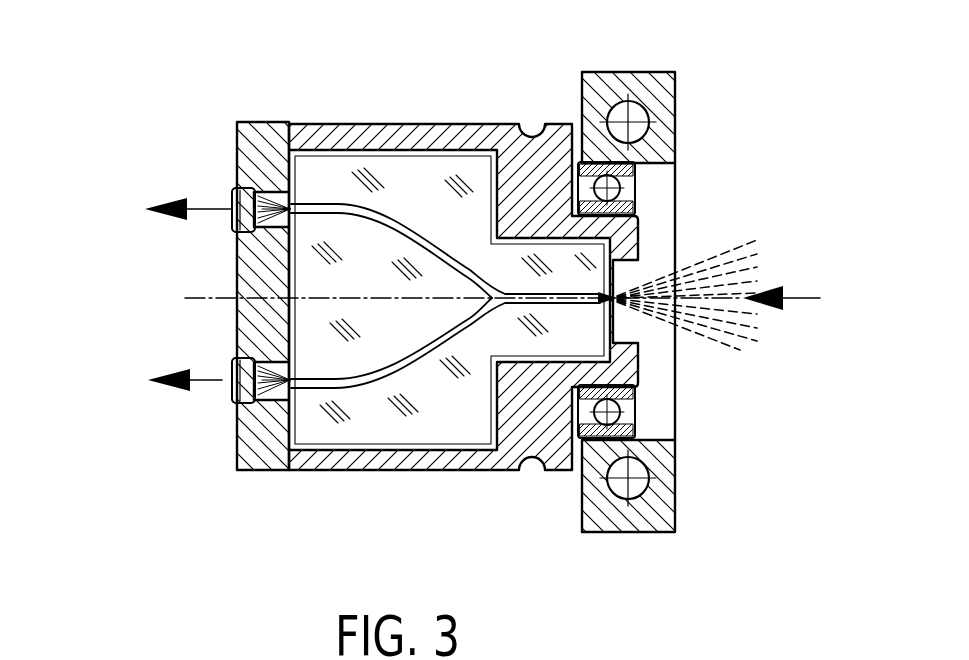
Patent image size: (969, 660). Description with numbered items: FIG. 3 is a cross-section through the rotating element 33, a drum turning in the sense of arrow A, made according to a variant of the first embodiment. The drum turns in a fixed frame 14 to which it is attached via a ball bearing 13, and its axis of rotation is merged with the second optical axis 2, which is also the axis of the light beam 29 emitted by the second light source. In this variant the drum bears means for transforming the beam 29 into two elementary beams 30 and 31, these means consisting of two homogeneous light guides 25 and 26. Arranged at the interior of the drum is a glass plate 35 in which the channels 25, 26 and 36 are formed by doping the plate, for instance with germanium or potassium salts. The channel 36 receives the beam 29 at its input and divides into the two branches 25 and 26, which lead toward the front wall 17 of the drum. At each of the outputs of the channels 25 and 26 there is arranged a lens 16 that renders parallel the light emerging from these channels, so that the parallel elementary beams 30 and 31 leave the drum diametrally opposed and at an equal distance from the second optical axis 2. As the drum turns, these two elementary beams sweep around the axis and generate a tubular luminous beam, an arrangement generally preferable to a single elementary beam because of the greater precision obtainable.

The second optical axis 2 is at (792, 298).
The ball bearing 13 is at (612, 412).
The fixed frame 14 is at (647, 92).
The lens 16 is at (233, 190).
The front wall 17 is at (253, 122).
The homogeneous light guide 25 is at (425, 252).
The homogeneous light guide 26 is at (423, 336).
The light beam 29 is at (743, 353).
The elementary beam 30 is at (192, 209).
The elementary beam 31 is at (200, 383).
The rotating element 33 is at (357, 112).
The glass plate 35 is at (395, 336).
The channel 36 is at (537, 295).
The arrow A is at (393, 123).